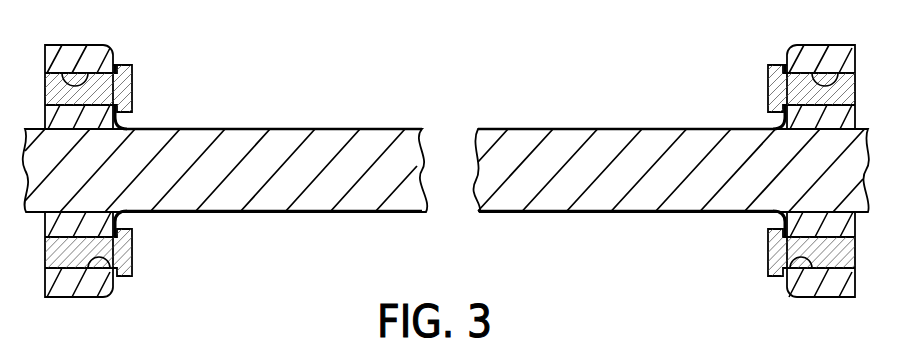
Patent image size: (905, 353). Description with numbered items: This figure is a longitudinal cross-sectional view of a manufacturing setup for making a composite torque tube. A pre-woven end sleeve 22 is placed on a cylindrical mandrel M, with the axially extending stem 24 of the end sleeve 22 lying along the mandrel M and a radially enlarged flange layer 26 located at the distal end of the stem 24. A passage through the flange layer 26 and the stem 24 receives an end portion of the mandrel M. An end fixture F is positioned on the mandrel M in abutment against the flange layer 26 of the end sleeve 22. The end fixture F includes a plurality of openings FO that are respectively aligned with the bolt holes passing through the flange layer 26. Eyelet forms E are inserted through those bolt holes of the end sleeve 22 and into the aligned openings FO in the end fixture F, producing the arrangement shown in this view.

The mandrel M is at (377, 190).
The end fixture F is at (75, 298).
The eyelet form E is at (120, 88).
The opening FO is at (88, 73).
The end sleeve 22 is at (134, 114).
The stem 24 is at (211, 129).
The flange layer 26 is at (114, 65).